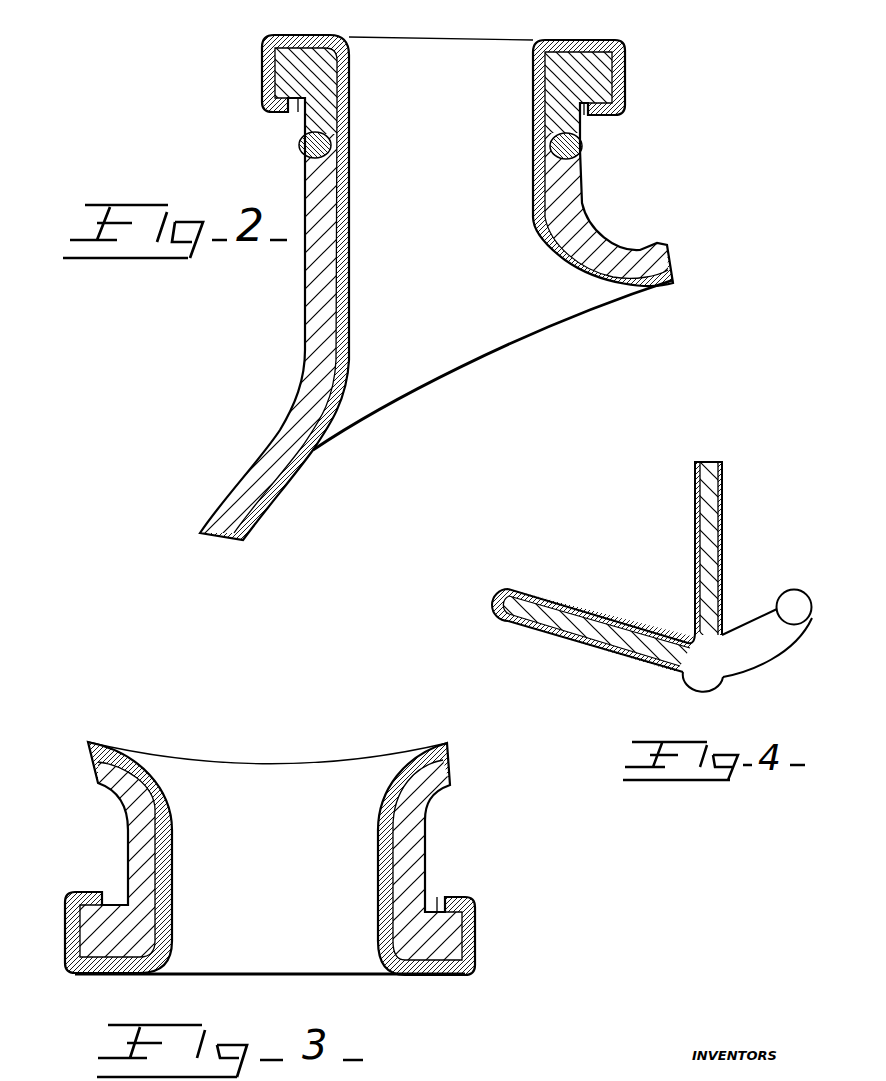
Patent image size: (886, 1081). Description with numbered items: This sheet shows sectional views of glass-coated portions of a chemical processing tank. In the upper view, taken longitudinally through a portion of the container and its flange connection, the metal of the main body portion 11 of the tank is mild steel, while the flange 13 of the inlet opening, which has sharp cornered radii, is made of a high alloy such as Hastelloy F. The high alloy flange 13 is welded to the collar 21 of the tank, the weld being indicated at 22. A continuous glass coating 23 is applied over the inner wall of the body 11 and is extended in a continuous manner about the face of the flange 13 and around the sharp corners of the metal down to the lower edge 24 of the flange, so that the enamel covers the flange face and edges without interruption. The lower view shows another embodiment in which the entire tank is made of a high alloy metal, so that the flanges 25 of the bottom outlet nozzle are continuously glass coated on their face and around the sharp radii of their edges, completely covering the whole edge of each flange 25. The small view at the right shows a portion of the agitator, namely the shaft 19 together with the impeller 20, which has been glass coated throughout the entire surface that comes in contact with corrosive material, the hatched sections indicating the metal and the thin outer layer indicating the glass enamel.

In FIG. 2, the main body portion 11 is at (233, 490).
In FIG. 2, the inlet nozzle flange 13 is at (670, 50).
In FIG. 3, the inlet nozzle flange 13 is at (403, 872).
In FIG. 4, the agitator shaft 19 is at (713, 487).
In FIG. 4, the impeller 20 is at (778, 668).
In FIG. 2, the collar 21 is at (643, 161).
In FIG. 2, the weld 22 is at (657, 134).
In FIG. 2, the continuous glass coating 23 is at (708, 255).
In FIG. 3, the continuous glass coating 23 is at (535, 923).
In FIG. 4, the continuous glass coating 23 is at (540, 597).
In FIG. 2, the lower edge of the flange 24 is at (667, 116).
In FIG. 3, the lower edge of the flange 24 is at (433, 903).
In FIG. 3, the outlet nozzle flange 25 is at (412, 808).